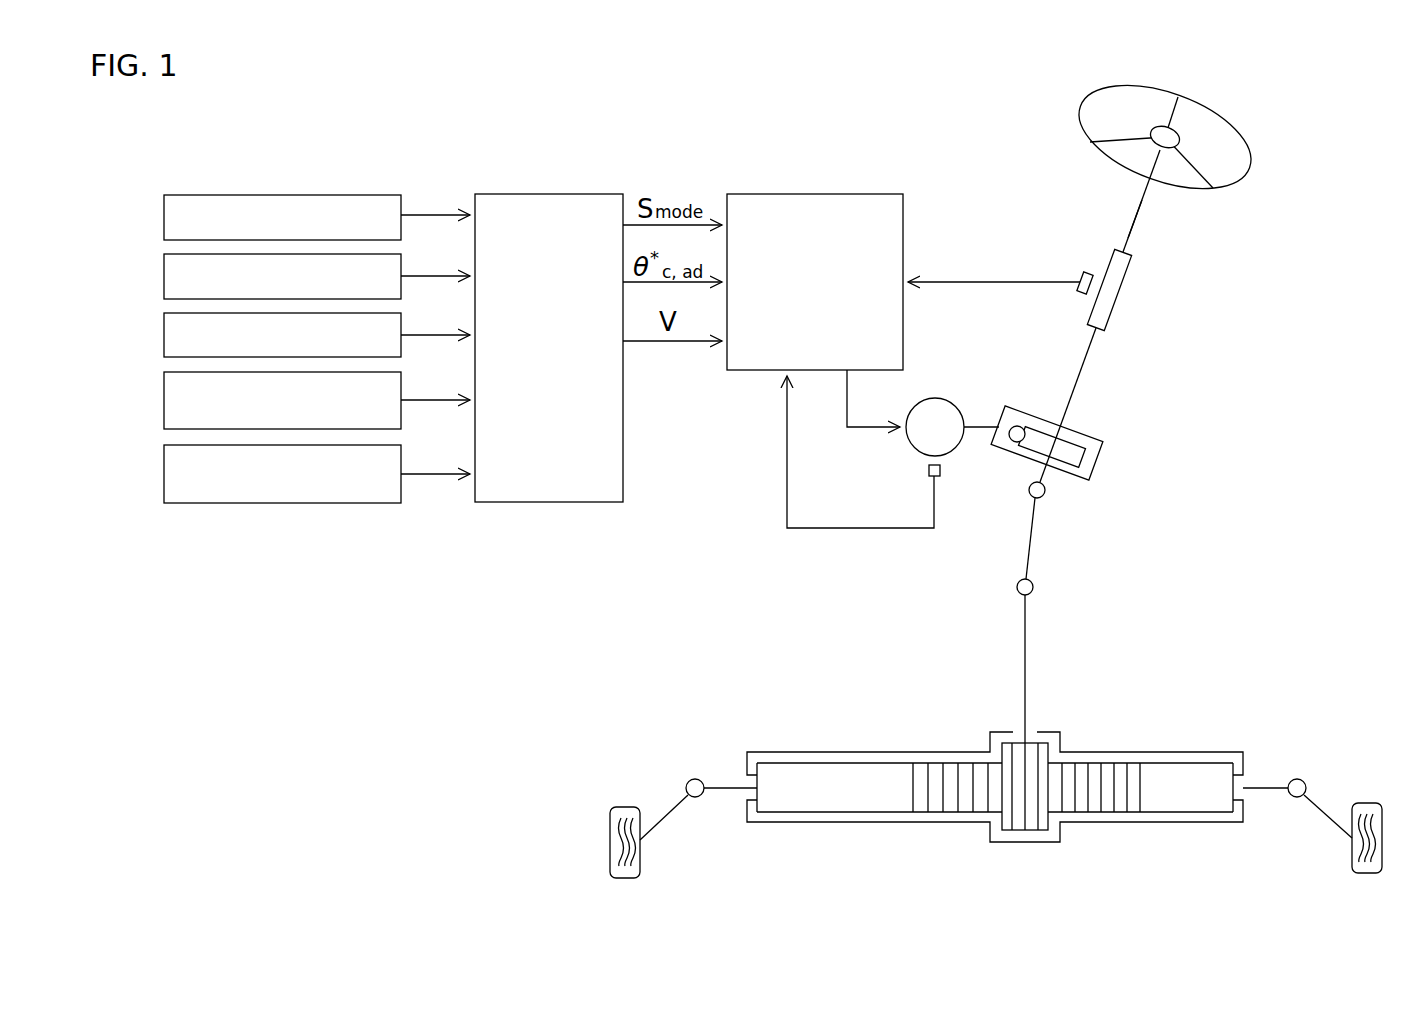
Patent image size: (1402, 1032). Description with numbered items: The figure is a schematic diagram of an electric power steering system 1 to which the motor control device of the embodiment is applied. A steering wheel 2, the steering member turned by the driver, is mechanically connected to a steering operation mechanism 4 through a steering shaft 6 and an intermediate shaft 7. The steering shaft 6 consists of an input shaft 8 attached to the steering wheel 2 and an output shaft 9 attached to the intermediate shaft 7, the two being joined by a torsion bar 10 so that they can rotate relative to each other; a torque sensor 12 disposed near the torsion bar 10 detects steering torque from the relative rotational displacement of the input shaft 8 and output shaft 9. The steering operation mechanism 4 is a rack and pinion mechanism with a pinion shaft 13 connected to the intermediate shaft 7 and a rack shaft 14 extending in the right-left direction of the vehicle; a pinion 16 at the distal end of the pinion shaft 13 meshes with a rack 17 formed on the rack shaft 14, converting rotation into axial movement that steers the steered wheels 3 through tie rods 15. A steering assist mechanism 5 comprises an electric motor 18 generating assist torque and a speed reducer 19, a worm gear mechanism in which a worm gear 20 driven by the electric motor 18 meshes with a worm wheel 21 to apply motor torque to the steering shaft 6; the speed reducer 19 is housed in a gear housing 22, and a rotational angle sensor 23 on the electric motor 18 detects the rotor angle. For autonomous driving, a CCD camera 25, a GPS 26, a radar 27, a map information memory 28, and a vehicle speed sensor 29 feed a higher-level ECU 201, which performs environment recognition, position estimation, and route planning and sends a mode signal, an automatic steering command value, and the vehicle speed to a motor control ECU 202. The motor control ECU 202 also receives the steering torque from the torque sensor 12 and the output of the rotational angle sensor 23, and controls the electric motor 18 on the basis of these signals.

The electric power steering system 1 is at (428, 135).
The steering wheel 2 is at (1208, 108).
The steered wheels 3 is at (625, 807).
The steering operation mechanism 4 is at (995, 793).
The steering assist mechanism 5 is at (1007, 403).
The steering shaft 6 is at (1147, 204).
The intermediate shaft 7 is at (1030, 555).
The input shaft 8 is at (1128, 240).
The output shaft 9 is at (1084, 373).
The torsion bar 10 is at (1113, 295).
The torque sensor 12 is at (1080, 278).
The pinion shaft 13 is at (1025, 648).
The rack shaft 14 is at (1187, 816).
The tie rods 15 is at (672, 815).
The pinion 16 is at (1025, 832).
The rack 17 is at (936, 808).
The electric motor 18 is at (935, 398).
The speed reducer 19 is at (1023, 408).
The worm gear 20 is at (1014, 443).
The worm wheel 21 is at (1072, 457).
The gear housing 22 is at (1070, 480).
The rotational angle sensor 23 is at (928, 471).
The CCD camera 25 is at (164, 215).
The GPS 26 is at (164, 276).
The radar 27 is at (164, 335).
The map information memory 28 is at (164, 400).
The vehicle speed sensor 29 is at (164, 474).
The higher-level ECU 201 is at (548, 194).
The motor control ECU 202 is at (845, 194).